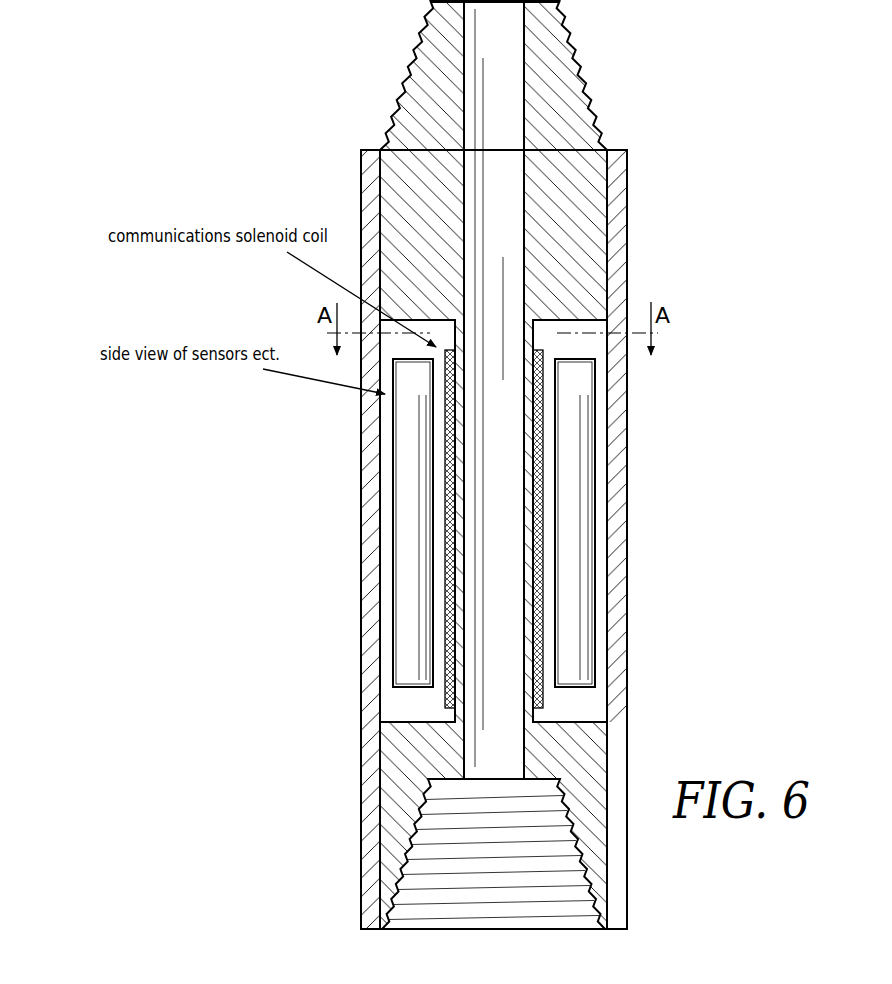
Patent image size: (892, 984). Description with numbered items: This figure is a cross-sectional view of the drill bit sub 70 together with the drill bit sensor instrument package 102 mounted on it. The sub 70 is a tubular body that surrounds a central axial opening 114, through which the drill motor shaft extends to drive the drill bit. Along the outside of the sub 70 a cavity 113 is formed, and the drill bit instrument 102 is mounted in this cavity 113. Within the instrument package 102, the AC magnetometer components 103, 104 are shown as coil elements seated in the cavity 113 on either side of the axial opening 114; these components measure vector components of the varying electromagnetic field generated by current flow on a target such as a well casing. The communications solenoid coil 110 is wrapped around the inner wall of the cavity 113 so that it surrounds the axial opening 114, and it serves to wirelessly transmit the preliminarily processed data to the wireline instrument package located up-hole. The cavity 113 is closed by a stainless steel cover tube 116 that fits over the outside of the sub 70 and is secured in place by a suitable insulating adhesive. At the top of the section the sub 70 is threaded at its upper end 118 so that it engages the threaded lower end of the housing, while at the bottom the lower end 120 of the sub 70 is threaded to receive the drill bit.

The drill bit sub 70 is at (588, 227).
The drill bit sensor instrument package 102 is at (660, 537).
The magnetometer component 103 is at (413, 515).
The magnetometer component 104 is at (595, 447).
The communications solenoid coil 110 is at (542, 356).
The cavity 113 is at (590, 708).
The axial opening 114 is at (500, 117).
The cover tube 116 is at (617, 607).
The upper end 118 is at (580, 58).
The lower end 120 is at (585, 862).